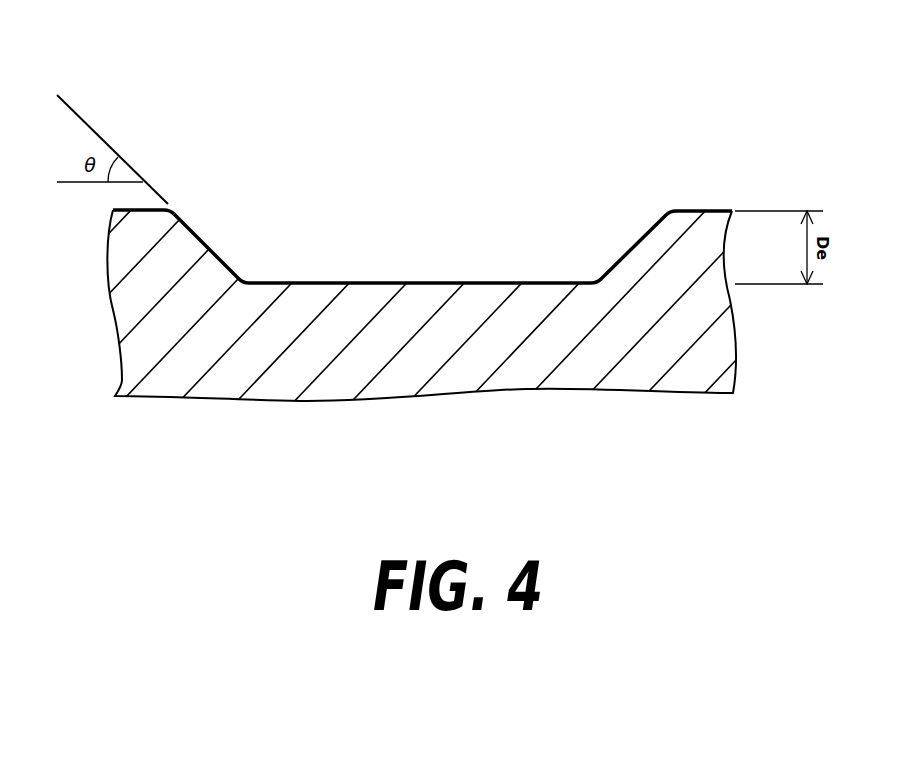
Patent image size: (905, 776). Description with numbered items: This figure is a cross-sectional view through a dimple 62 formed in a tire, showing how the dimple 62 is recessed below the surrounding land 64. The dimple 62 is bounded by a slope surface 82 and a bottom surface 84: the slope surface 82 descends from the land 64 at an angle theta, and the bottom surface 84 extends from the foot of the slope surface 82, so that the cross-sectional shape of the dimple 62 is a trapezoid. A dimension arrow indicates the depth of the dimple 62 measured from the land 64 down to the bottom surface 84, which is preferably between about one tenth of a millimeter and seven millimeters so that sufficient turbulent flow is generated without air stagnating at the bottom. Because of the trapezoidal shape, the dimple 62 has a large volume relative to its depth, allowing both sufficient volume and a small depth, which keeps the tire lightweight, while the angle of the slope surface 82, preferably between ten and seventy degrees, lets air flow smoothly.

The dimple 62 is at (425, 204).
The land 64 is at (688, 211).
The slope surface 82 is at (203, 240).
The bottom surface 84 is at (378, 283).